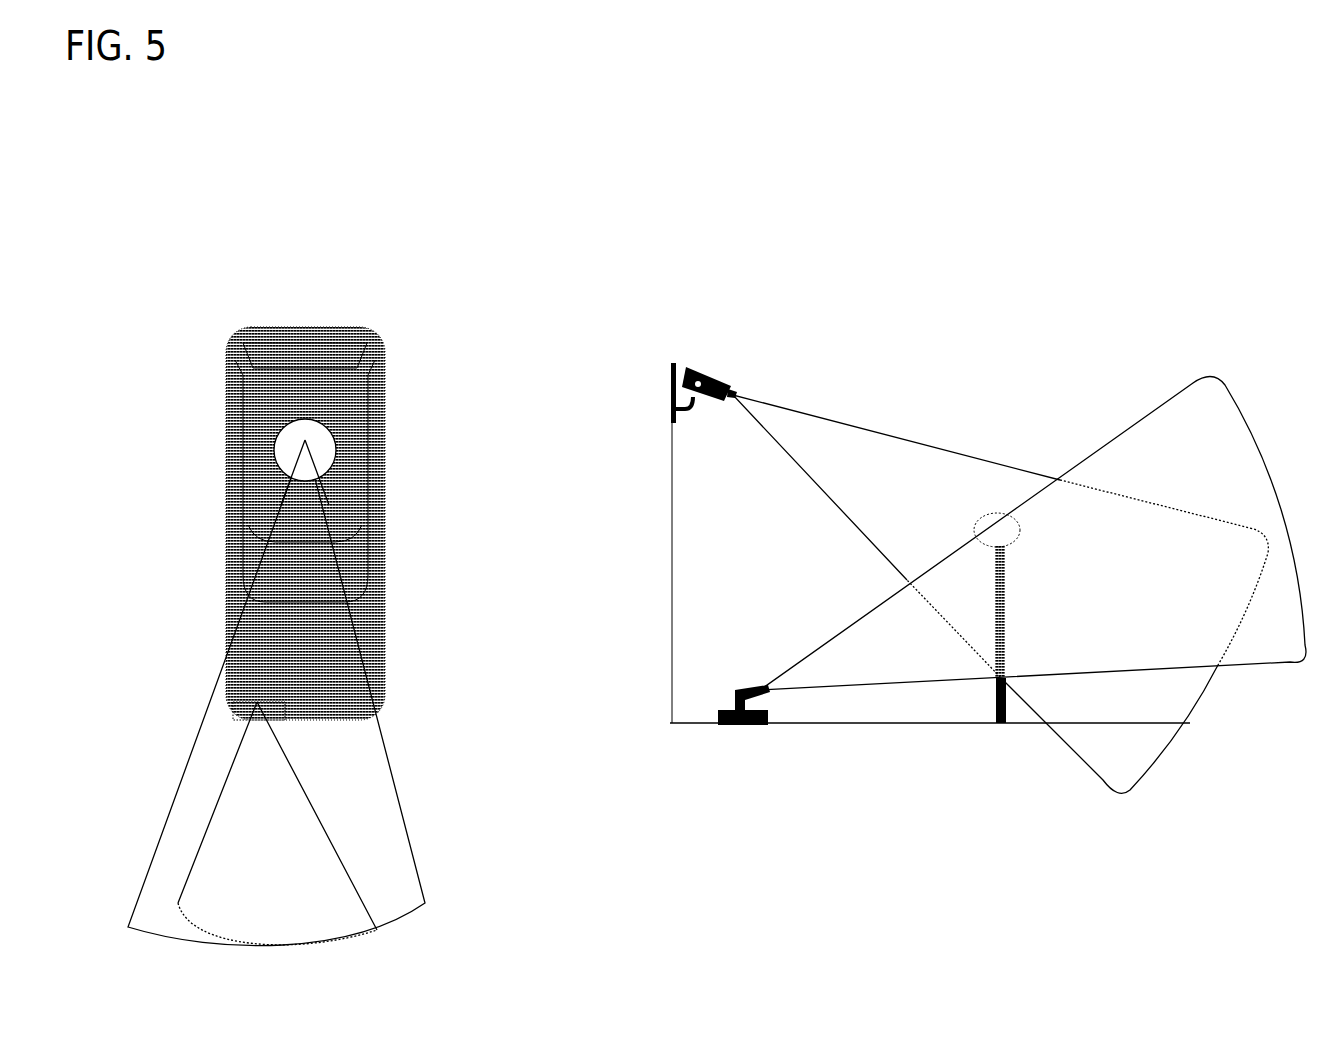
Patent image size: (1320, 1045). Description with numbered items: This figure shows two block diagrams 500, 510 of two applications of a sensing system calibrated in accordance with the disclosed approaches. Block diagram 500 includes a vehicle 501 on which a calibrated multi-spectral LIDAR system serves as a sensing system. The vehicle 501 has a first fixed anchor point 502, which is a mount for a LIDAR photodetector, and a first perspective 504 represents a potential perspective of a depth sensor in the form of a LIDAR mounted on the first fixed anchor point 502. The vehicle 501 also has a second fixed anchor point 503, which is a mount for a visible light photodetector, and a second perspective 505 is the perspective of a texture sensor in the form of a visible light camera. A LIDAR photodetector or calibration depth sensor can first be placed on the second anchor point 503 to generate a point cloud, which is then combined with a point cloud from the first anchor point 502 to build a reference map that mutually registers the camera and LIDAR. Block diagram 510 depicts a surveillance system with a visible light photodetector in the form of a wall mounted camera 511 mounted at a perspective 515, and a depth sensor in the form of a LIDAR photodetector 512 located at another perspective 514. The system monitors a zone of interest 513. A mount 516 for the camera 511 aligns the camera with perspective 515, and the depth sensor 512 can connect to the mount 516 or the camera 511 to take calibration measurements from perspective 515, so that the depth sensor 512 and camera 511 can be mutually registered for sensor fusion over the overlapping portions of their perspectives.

The block diagram 500 is at (152, 201).
The vehicle 501 is at (317, 325).
The first fixed anchor point 502 is at (299, 422).
The second fixed anchor point 503 is at (270, 695).
The first perspective 504 is at (362, 784).
The second perspective 505 is at (288, 871).
The block diagram 510 is at (800, 209).
The wall mounted camera 511 is at (717, 372).
The LIDAR photodetector 512 is at (742, 690).
The zone of interest 513 is at (1023, 792).
The perspective 514 is at (1207, 464).
The perspective 515 is at (1153, 604).
The mount 516 is at (668, 380).